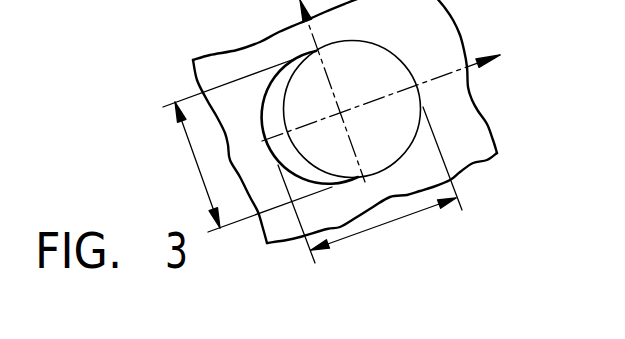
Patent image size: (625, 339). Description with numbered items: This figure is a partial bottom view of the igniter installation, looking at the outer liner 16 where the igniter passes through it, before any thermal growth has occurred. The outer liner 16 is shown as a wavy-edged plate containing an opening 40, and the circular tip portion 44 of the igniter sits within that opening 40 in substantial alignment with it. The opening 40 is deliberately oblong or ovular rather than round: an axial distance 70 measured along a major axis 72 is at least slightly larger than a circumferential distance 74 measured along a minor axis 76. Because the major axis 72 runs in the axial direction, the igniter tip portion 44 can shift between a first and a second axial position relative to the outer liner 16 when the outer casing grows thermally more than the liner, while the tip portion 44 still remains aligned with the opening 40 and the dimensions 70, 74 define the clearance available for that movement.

The outer liner 16 is at (473, 143).
The opening 40 is at (276, 150).
The tip portion 44 is at (373, 72).
The axial distance 70 is at (383, 225).
The major axis 72 is at (449, 72).
The circumferential distance 74 is at (198, 170).
The minor axis 76 is at (317, 50).